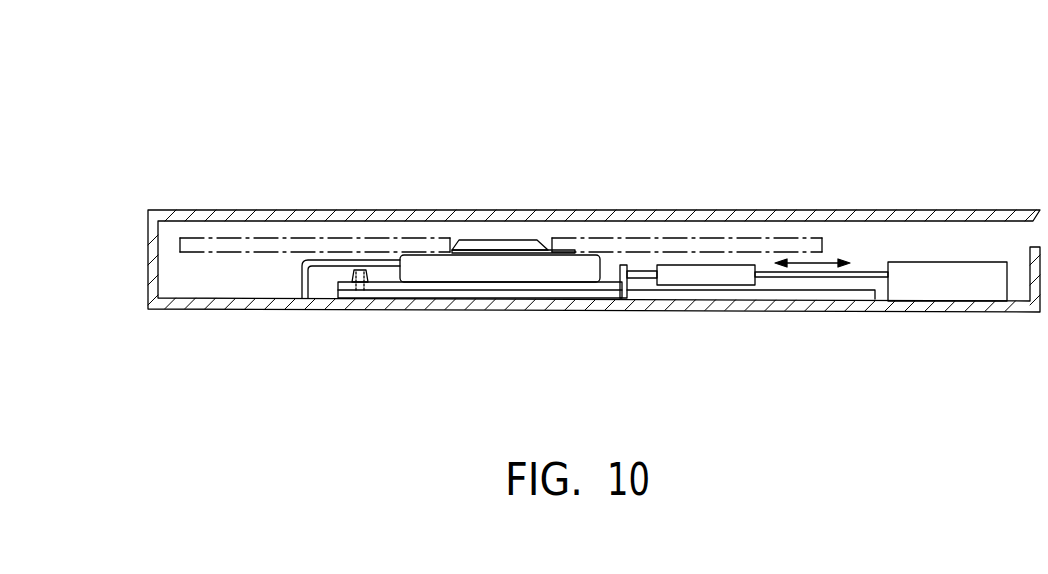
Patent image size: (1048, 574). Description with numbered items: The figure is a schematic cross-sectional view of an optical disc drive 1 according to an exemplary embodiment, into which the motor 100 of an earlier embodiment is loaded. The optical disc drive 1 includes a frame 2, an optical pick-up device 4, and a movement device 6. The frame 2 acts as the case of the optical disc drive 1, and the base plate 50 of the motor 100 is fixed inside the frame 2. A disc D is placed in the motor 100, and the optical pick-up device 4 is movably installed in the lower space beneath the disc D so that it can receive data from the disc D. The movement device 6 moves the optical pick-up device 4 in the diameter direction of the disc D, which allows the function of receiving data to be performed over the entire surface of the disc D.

The optical disc drive 1 is at (614, 86).
The frame 2 is at (237, 306).
The disc D is at (673, 245).
The motor 100 is at (505, 237).
The base plate 50 is at (525, 285).
The optical pick-up device 4 is at (694, 282).
The movement device 6 is at (860, 272).